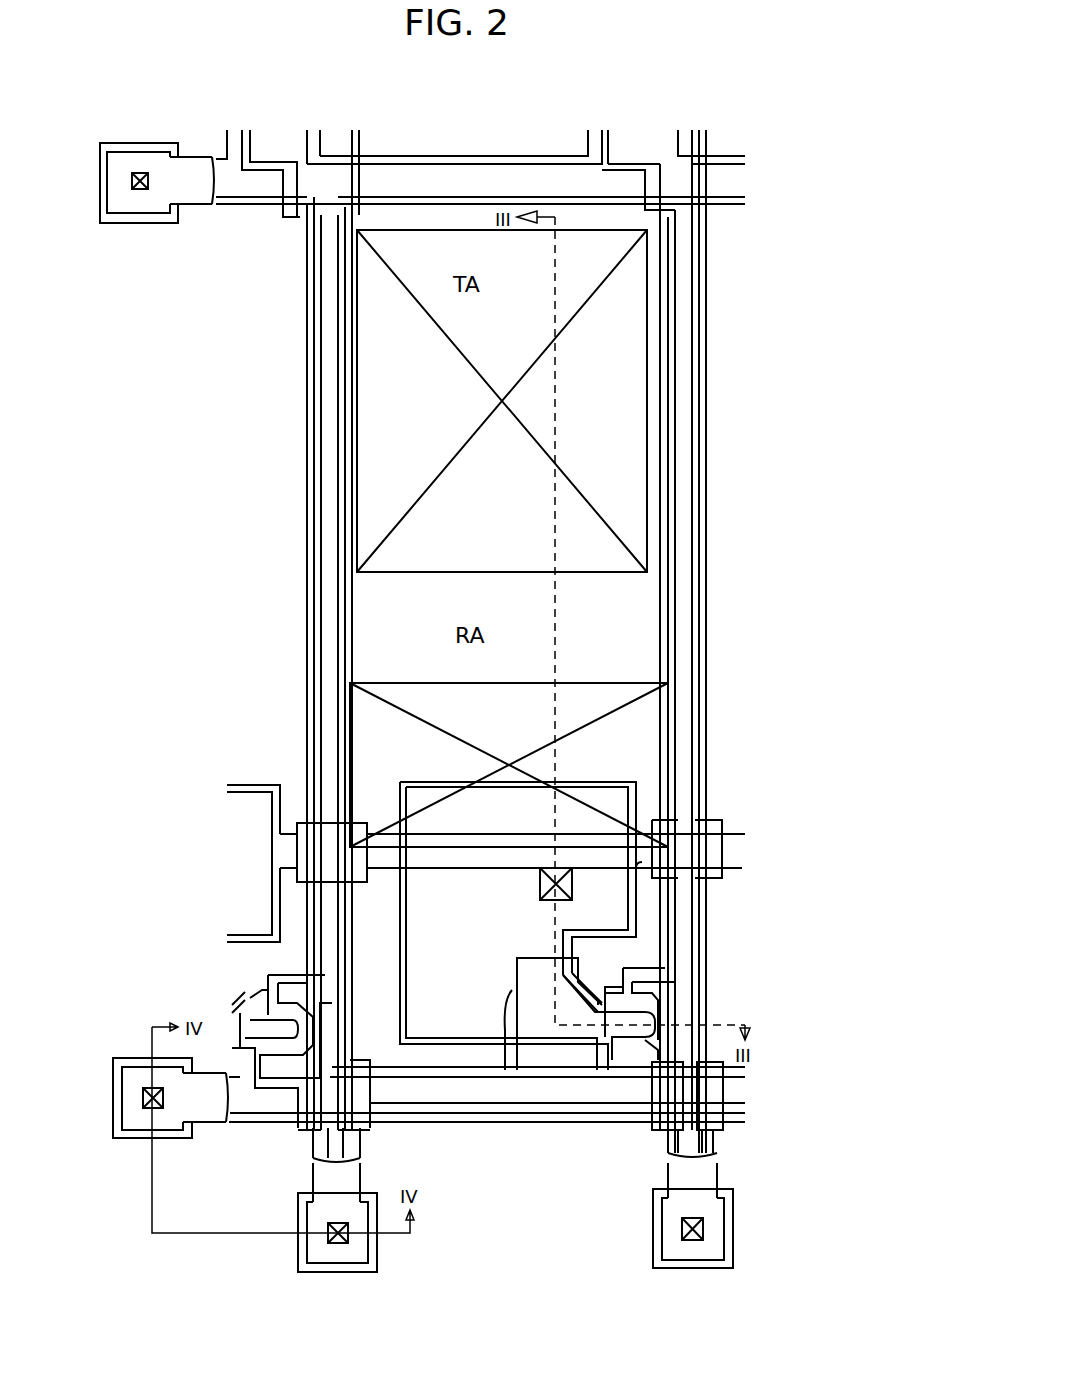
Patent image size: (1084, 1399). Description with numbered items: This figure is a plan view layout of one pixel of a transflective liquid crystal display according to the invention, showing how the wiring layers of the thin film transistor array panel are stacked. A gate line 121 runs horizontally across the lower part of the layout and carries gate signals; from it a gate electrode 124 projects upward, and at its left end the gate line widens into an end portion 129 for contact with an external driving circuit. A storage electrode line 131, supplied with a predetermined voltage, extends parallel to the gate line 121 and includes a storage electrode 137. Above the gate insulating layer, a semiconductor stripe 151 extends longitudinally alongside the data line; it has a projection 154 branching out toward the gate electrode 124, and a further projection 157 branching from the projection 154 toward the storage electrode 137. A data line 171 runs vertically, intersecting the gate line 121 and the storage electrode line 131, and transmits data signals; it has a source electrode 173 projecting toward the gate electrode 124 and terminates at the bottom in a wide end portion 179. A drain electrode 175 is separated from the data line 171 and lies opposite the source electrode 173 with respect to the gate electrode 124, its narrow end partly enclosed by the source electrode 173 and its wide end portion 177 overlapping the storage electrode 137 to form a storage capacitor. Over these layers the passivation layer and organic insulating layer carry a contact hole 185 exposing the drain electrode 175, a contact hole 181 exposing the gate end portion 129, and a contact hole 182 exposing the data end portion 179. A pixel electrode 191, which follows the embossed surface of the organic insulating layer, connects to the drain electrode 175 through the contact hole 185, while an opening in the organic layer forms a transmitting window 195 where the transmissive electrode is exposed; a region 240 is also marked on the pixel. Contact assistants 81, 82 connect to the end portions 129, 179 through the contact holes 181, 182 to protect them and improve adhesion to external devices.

The gate line 121 is at (440, 1078).
The gate electrode 124 is at (612, 968).
The end portion of gate line 129 is at (133, 1062).
The storage electrode line 131 is at (735, 826).
The storage electrode 137 is at (637, 800).
The semiconductor stripe 151 is at (676, 490).
The projection of semiconductor stripe 154 is at (658, 1005).
The projection of semiconductor stripe 157 is at (515, 1045).
The data line 171 is at (707, 568).
The source electrode 173 is at (640, 965).
The drain electrode 175 is at (605, 1072).
The wide end portion of drain electrode 177 is at (623, 776).
The end portion of data line 179 is at (375, 1252).
The contact hole 181 is at (153, 1108).
The contact hole 182 is at (328, 1233).
The contact hole 185 is at (572, 887).
The pixel electrode 191 is at (668, 432).
The transmitting window 195 is at (652, 373).
The opening 240 is at (622, 668).
The contact assistant 81 is at (175, 1138).
The contact assistant 82 is at (298, 1213).